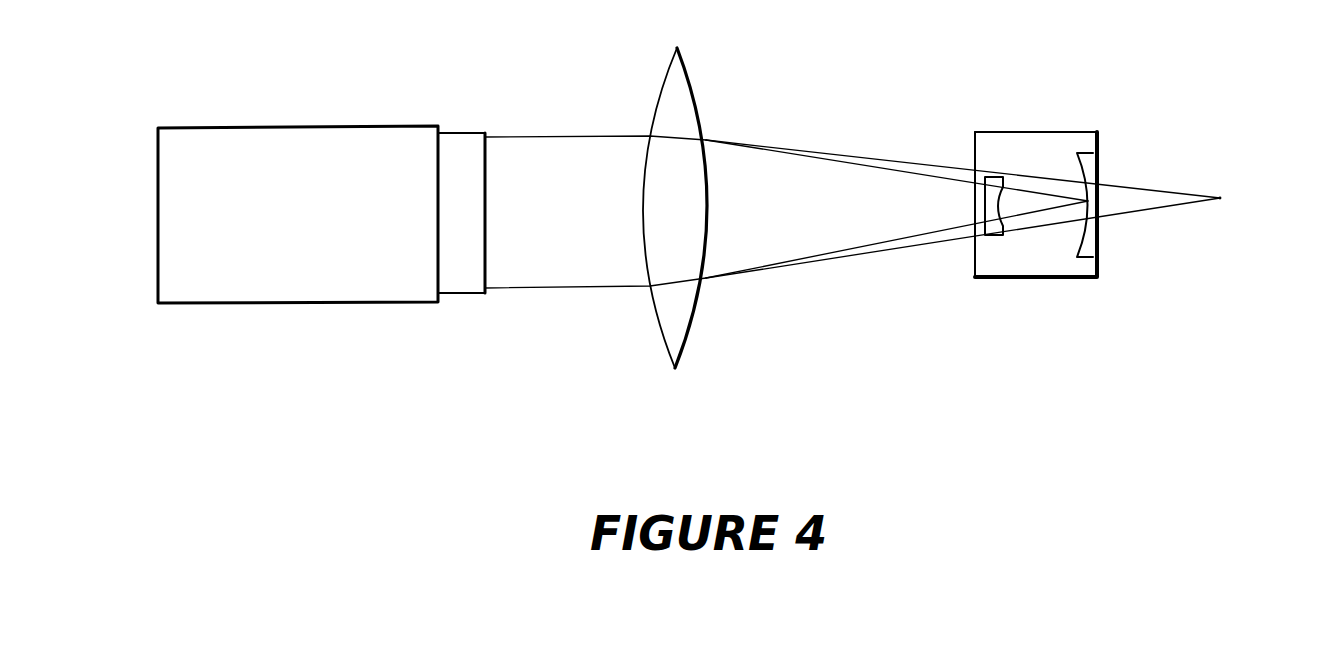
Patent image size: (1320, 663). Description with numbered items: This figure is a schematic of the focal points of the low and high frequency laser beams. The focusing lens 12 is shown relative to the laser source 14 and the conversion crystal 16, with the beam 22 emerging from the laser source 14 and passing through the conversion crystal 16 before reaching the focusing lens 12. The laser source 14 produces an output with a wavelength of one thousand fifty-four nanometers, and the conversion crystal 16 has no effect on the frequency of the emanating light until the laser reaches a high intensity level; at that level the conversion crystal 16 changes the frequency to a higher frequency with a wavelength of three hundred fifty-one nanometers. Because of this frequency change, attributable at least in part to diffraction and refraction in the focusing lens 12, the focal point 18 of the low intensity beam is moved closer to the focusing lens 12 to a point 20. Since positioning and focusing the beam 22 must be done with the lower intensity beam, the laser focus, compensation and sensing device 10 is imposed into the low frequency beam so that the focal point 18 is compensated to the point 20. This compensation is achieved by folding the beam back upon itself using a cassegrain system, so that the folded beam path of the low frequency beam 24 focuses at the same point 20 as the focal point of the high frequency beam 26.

The laser focus, compensation and sensing device 10 is at (1052, 130).
The focusing lens 12 is at (673, 343).
The laser source 14 is at (242, 303).
The conversion crystal 16 is at (460, 137).
The focal point 18 is at (1210, 198).
The point 20 is at (1083, 197).
The beam 22 is at (578, 258).
The low frequency beam 24 is at (1135, 202).
The high frequency beam 26 is at (865, 227).